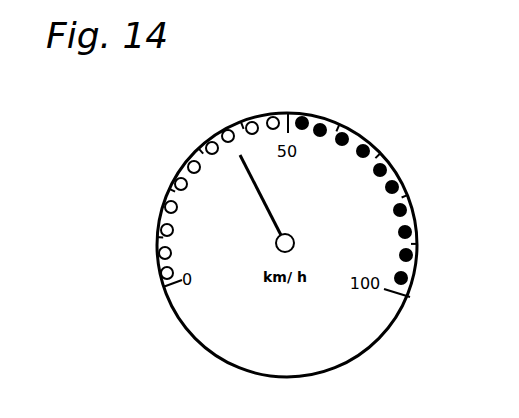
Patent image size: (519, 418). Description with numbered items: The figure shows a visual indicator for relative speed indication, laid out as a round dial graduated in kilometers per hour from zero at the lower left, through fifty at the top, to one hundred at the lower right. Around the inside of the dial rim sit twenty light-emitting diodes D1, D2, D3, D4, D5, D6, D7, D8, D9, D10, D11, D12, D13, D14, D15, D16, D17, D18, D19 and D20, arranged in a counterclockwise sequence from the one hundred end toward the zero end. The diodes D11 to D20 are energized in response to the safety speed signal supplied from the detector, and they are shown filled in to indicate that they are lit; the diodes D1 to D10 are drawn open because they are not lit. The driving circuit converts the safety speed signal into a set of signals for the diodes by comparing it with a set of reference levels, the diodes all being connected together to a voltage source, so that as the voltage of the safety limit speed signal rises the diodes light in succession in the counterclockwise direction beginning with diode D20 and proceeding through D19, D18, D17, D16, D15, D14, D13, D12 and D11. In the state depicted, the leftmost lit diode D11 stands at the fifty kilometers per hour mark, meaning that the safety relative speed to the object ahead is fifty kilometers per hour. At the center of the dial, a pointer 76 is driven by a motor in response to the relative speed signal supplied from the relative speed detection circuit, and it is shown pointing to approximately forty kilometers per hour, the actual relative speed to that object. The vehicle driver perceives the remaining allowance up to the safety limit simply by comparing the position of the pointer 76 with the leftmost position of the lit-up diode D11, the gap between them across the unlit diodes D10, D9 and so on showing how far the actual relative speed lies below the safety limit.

The light-emitting diode D1 is at (158, 275).
The light-emitting diode D2 is at (155, 254).
The light-emitting diode D3 is at (156, 229).
The light-emitting diode D4 is at (162, 204).
The light-emitting diode D5 is at (173, 179).
The light-emitting diode D6 is at (186, 160).
The light-emitting diode D7 is at (206, 141).
The light-emitting diode D8 is at (224, 129).
The light-emitting diode D9 is at (249, 118).
The light-emitting diode D10 is at (272, 114).
The light-emitting diode D11 is at (303, 114).
The light-emitting diode D12 is at (323, 118).
The light-emitting diode D13 is at (348, 128).
The light-emitting diode D14 is at (370, 142).
The light-emitting diode D15 is at (390, 162).
The light-emitting diode D16 is at (402, 181).
The light-emitting diode D17 is at (413, 206).
The light-emitting diode D18 is at (418, 230).
The light-emitting diode D19 is at (418, 256).
The light-emitting diode D20 is at (414, 282).
The pointer 76 is at (262, 198).